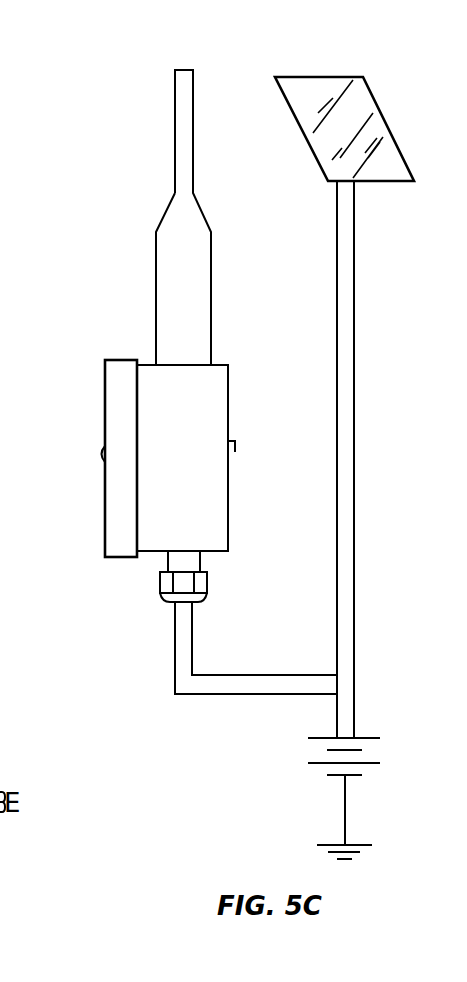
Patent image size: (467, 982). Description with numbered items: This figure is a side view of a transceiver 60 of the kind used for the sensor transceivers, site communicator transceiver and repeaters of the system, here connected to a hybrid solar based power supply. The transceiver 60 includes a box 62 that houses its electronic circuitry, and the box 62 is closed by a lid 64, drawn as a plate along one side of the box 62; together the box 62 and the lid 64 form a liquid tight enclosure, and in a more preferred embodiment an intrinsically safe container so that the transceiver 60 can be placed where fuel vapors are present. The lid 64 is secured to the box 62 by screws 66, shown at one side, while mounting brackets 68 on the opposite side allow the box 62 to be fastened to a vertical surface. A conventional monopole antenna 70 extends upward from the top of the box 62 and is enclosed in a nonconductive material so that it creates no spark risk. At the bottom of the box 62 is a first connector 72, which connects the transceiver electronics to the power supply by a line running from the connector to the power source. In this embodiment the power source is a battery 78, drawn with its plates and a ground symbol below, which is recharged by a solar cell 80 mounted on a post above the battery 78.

The transceiver 60 is at (421, 82).
The box 62 is at (236, 399).
The lid 64 is at (89, 422).
The screws 66 is at (103, 463).
The mounting brackets 68 is at (235, 452).
The monopole antenna 70 is at (193, 114).
The first connector 72 is at (170, 603).
The battery 78 is at (389, 751).
The solar cell 80 is at (406, 184).